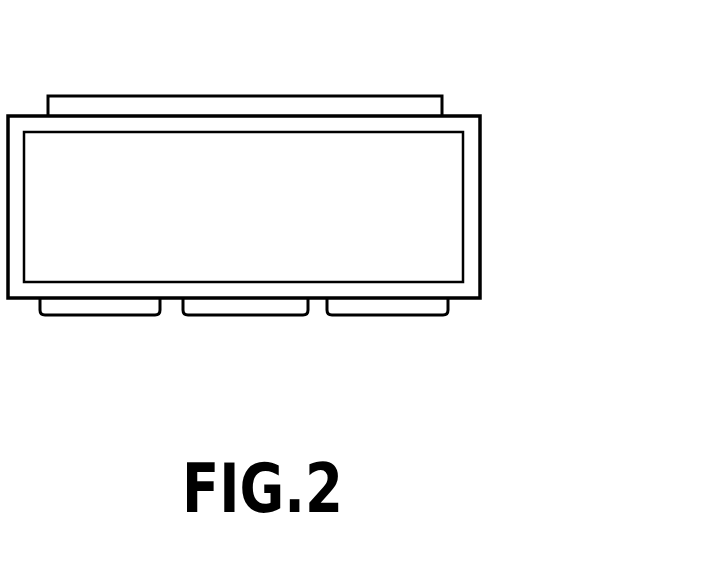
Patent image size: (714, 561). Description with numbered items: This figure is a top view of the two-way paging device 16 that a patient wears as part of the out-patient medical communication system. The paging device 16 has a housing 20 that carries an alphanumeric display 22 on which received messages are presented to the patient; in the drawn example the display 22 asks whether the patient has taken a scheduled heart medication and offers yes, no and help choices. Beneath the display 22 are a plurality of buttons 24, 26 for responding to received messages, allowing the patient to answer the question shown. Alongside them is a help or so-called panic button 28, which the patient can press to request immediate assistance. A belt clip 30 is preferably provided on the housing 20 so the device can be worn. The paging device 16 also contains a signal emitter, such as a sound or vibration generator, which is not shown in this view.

The two-way paging device 16 is at (528, 112).
The housing 20 is at (480, 233).
The alphanumeric display 22 is at (402, 203).
The button 24 is at (102, 315).
The button 26 is at (250, 315).
The help button 28 is at (390, 315).
The belt clip 30 is at (203, 96).